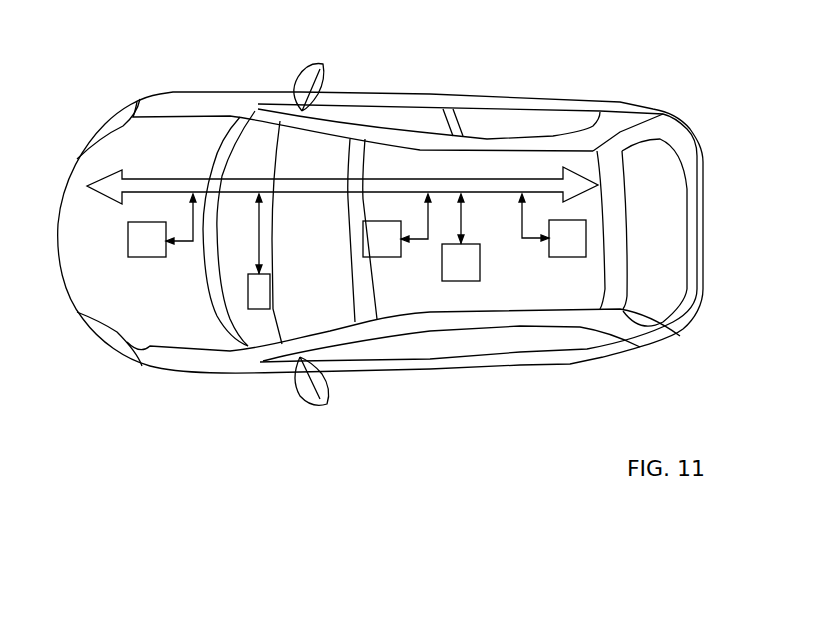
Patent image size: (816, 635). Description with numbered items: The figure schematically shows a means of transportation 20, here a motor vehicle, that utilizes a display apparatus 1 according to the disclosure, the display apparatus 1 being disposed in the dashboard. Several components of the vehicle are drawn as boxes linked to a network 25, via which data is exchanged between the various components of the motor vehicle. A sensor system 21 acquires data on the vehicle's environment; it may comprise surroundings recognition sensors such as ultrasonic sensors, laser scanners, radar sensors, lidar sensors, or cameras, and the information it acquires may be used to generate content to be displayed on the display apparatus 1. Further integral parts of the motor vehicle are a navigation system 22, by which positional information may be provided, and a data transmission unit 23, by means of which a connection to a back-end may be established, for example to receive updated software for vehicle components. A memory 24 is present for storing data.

The means of transportation 20 is at (599, 93).
The network 25 is at (489, 171).
The display apparatus 1 is at (251, 301).
The sensor system 21 is at (375, 249).
The navigation system 22 is at (139, 249).
The data transmission unit 23 is at (453, 273).
The memory 24 is at (559, 249).